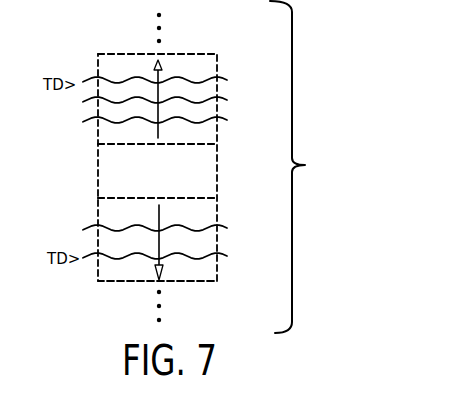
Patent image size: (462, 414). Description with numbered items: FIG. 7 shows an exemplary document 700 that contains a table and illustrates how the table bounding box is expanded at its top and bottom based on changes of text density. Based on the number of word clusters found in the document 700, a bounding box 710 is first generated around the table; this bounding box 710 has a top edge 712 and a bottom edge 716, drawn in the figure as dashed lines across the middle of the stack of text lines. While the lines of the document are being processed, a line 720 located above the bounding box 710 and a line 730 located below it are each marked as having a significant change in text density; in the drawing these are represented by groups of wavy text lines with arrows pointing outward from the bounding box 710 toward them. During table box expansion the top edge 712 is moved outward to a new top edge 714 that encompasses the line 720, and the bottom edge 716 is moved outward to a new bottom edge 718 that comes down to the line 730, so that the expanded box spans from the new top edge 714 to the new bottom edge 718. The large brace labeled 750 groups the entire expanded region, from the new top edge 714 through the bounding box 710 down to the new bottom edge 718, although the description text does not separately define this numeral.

The document 700 is at (352, 92).
The bounding box 710 is at (218, 145).
The top edge 712 is at (217, 143).
The new top edge 714 is at (217, 54).
The bottom edge 716 is at (217, 200).
The new bottom edge 718 is at (217, 281).
The line 720 is at (178, 99).
The line 730 is at (179, 242).
The film stack 750 is at (308, 167).